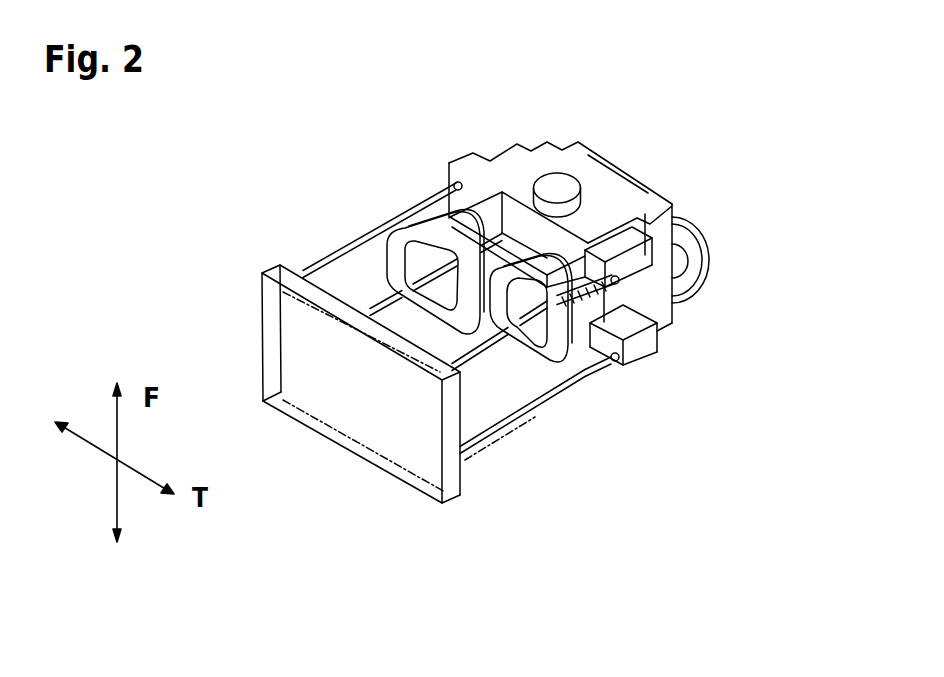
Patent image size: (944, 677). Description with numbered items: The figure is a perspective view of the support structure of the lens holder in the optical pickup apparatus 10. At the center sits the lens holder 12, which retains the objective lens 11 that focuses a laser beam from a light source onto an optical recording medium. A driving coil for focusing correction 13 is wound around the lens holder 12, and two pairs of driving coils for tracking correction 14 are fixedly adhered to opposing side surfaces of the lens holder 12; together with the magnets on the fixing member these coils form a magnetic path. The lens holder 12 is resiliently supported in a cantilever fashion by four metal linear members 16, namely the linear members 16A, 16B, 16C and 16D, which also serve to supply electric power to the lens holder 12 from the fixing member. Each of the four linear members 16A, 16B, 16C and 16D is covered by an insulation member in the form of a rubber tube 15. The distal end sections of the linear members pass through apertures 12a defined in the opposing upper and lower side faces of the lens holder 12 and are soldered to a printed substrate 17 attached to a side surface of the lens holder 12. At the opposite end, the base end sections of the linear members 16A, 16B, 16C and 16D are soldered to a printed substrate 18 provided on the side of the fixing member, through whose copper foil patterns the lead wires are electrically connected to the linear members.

The optical pickup apparatus 10 is at (724, 108).
The objective lens 11 is at (558, 176).
The lens holder 12 is at (457, 157).
The apertures 12a is at (452, 190).
The driving coil for focusing correction 13 is at (587, 332).
The driving coils for tracking correction 14 is at (543, 143).
The rubber tube 15 is at (302, 247).
The linear members 16 is at (454, 260).
The linear member 16A is at (347, 256).
The linear member 16B is at (356, 258).
The linear member 16C is at (440, 364).
The linear member 16D is at (593, 368).
The printed substrate 17 is at (690, 260).
The printed substrate 18 is at (402, 486).